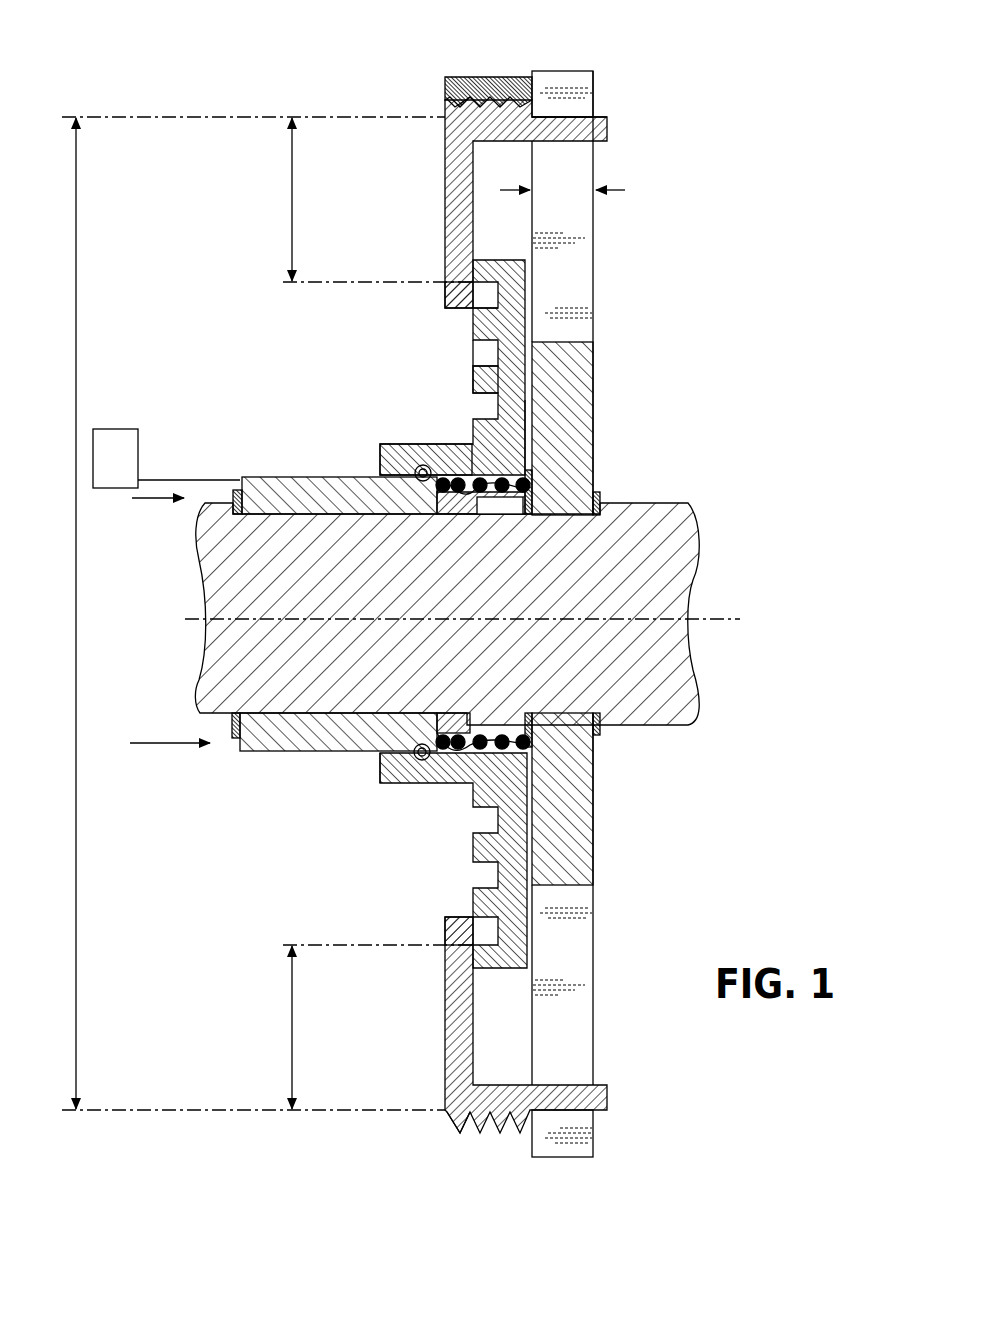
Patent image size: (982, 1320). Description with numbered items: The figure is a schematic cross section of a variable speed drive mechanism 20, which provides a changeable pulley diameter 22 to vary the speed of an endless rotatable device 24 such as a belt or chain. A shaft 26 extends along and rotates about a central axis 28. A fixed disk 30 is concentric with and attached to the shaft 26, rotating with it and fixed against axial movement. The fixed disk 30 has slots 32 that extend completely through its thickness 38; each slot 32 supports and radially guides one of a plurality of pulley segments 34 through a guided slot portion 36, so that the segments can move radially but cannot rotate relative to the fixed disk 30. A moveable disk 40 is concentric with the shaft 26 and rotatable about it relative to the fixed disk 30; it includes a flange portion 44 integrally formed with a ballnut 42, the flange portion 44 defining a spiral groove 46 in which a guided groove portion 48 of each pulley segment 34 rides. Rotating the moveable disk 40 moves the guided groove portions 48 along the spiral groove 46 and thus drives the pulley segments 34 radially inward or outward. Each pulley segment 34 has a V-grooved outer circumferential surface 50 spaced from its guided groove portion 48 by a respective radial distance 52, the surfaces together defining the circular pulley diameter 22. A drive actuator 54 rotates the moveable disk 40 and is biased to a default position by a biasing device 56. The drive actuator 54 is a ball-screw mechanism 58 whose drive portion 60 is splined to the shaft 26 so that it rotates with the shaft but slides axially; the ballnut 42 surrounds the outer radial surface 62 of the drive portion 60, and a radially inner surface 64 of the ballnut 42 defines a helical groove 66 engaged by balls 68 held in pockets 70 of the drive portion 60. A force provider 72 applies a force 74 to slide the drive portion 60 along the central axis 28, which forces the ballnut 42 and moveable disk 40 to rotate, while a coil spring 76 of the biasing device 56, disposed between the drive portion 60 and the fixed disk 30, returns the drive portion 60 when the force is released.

The variable speed drive mechanism 20 is at (638, 322).
The pulley diameter 22 is at (75, 660).
The endless rotatable device 24 is at (492, 82).
The shaft 26 is at (668, 512).
The central axis 28 is at (712, 612).
The fixed disk 30 is at (578, 432).
The slots 32 is at (580, 160).
The pulley segments 34 is at (455, 180).
The guided slot portion 36 is at (565, 122).
The thickness 38 is at (625, 190).
The moveable disk 40 is at (466, 372).
The ballnut 42 is at (520, 440).
The flange portion 44 is at (500, 325).
The spiral groove 46 is at (480, 345).
The guided groove portion 48 is at (490, 280).
The outer circumferential surface 50 is at (462, 100).
The radial distance 52 is at (290, 216).
The drive actuator 54 is at (348, 768).
The biasing device 56 is at (478, 500).
The ball-screw mechanism 58 is at (405, 455).
The drive portion 60 is at (285, 478).
The outer radial surface 62 is at (270, 752).
The radially inner surface 64 is at (435, 785).
The helical groove 66 is at (470, 470).
The balls 68 is at (420, 480).
The pocket 70 is at (450, 495).
The force provider 72 is at (120, 440).
The force 74 is at (148, 500).
The coil spring 76 is at (520, 480).